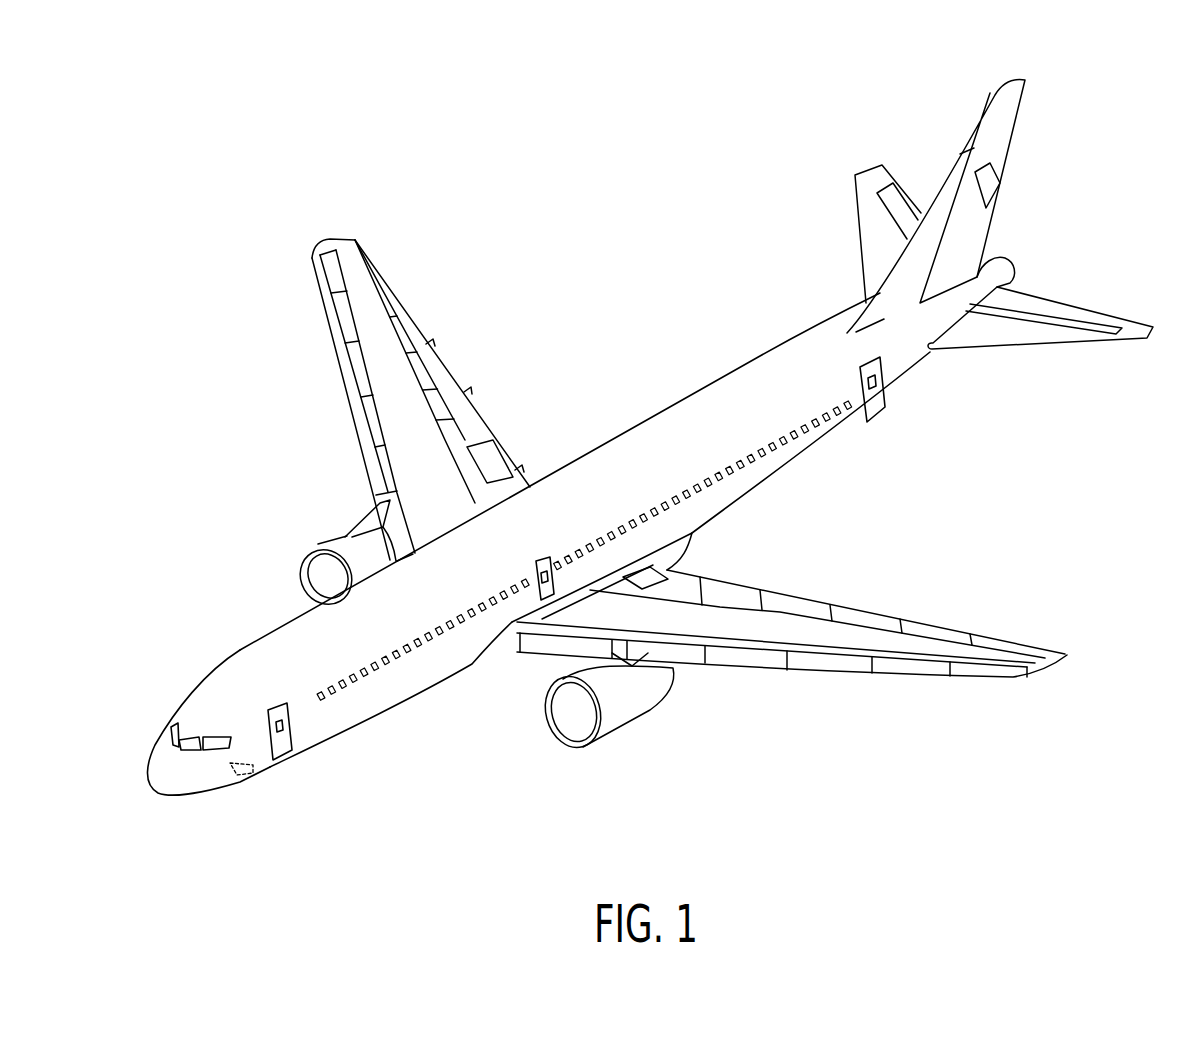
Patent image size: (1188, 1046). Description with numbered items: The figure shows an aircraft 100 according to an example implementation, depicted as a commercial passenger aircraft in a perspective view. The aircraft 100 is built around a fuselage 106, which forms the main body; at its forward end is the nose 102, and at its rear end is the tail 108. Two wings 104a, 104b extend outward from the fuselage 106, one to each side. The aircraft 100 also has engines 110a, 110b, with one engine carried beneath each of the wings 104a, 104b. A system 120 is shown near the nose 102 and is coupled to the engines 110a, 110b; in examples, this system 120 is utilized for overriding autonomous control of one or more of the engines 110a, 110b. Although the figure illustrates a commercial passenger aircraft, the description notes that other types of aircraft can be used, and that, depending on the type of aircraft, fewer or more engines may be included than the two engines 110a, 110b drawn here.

The aircraft 100 is at (588, 356).
The nose 102 is at (166, 815).
The wing 104a is at (367, 232).
The wing 104b is at (1088, 648).
The fuselage 106 is at (747, 487).
The tail 108 is at (1048, 83).
The engine 110a is at (326, 545).
The engine 110b is at (613, 717).
The system 120 is at (240, 798).